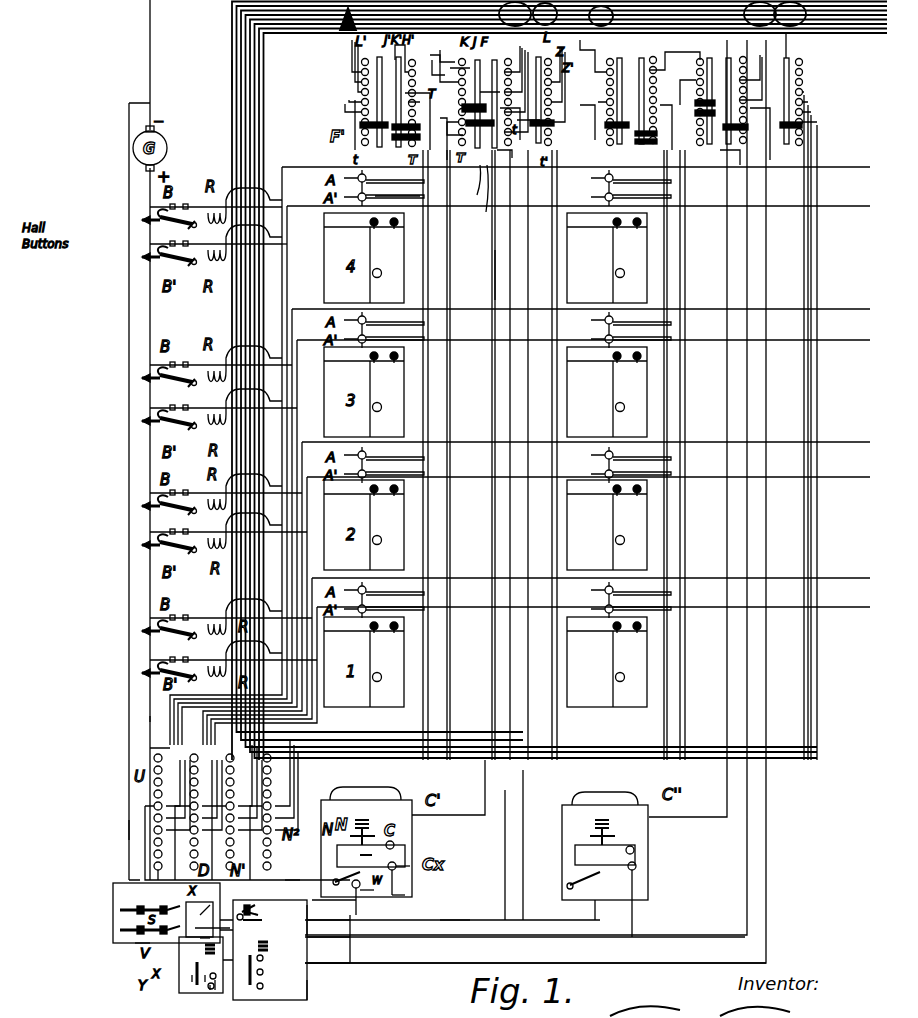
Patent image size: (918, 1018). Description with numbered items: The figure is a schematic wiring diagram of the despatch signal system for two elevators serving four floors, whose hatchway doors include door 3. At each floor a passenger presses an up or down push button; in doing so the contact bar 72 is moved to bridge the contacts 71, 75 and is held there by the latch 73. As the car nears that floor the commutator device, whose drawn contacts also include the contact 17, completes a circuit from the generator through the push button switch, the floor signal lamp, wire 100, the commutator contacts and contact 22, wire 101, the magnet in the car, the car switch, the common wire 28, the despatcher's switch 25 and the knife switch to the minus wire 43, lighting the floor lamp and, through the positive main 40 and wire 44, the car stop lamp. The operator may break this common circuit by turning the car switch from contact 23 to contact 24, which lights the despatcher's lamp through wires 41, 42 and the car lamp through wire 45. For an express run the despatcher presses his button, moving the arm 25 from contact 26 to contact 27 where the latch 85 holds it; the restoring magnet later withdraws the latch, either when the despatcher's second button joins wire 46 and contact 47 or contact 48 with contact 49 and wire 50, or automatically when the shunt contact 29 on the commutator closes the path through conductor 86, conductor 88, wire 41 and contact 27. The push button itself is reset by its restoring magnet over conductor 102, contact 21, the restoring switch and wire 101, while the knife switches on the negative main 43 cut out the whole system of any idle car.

The door 3 is at (166, 913).
The contact 17 is at (510, 157).
The contact 21 is at (441, 58).
The contact 22 is at (470, 183).
The contact 23 is at (366, 851).
The contact 24 is at (375, 892).
The despatcher's switch 25 is at (208, 917).
The contact 26 is at (201, 965).
The contact 27 is at (270, 948).
The common wire 28 is at (292, 880).
The shunt contact 29 is at (478, 196).
The positive main 40 is at (150, 715).
The wire 41 is at (300, 895).
The wire 42 is at (355, 908).
The negative main 43 is at (129, 830).
The wire 44 is at (405, 902).
The wire 45 is at (410, 884).
The wire 46 is at (228, 961).
The contact 47 is at (218, 985).
The contact 48 is at (205, 980).
The contact 49 is at (213, 988).
The wire 50 is at (195, 978).
The contact 71 is at (175, 206).
The contact bar 72 is at (214, 245).
The latch 73 is at (212, 228).
The contact 75 is at (200, 200).
The latch 85 is at (205, 940).
The conductor 86 is at (530, 800).
The conductor 88 is at (505, 846).
The wire 100 is at (397, 197).
The wire 101 is at (494, 271).
The conductor 102 is at (233, 73).